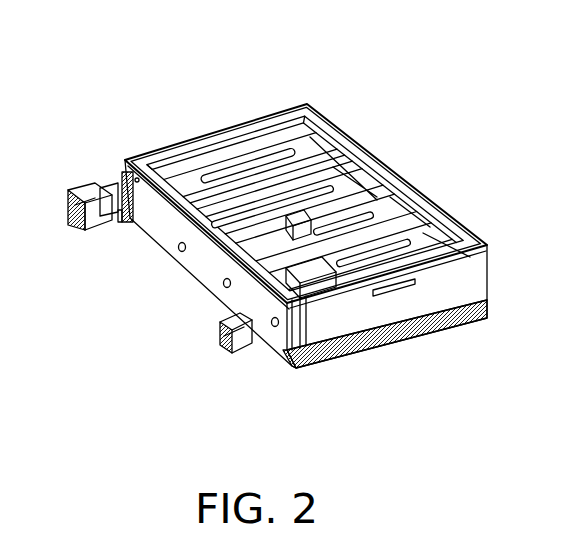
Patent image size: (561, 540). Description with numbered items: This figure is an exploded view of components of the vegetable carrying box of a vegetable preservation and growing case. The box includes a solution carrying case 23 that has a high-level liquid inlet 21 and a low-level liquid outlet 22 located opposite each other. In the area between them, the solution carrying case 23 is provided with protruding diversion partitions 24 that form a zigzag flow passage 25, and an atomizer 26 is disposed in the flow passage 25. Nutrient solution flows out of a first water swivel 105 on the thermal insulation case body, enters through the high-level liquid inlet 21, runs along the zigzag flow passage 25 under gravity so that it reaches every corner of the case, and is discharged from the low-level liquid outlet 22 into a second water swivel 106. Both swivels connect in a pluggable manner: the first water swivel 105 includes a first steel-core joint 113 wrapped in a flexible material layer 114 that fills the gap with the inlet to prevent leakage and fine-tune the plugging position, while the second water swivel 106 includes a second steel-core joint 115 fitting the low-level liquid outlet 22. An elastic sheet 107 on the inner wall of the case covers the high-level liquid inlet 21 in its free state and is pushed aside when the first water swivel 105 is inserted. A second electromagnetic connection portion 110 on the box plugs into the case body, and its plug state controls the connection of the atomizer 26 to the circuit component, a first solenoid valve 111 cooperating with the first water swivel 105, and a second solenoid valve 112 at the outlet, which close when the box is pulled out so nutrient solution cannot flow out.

The high-level liquid inlet 21 is at (120, 173).
The low-level liquid outlet 22 is at (275, 328).
The solution carrying case 23 is at (275, 109).
The diversion partitions 24 is at (367, 150).
The zigzag flow passage 25 is at (203, 130).
The atomizer 26 is at (291, 226).
The first water swivel 105 is at (100, 198).
The second water swivel 106 is at (220, 320).
The elastic sheet 107 is at (137, 178).
The second electromagnetic connection portion 110 is at (180, 249).
The first solenoid valve 111 is at (100, 210).
The second solenoid valve 112 is at (312, 306).
The first steel-core joint 113 is at (128, 218).
The flexible material layer 114 is at (112, 190).
The second steel-core joint 115 is at (238, 355).